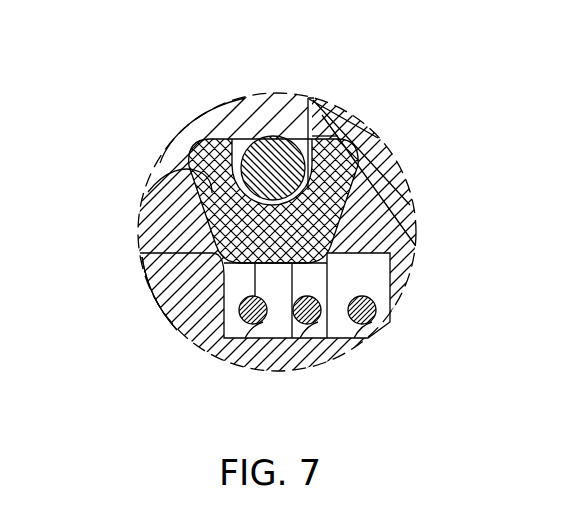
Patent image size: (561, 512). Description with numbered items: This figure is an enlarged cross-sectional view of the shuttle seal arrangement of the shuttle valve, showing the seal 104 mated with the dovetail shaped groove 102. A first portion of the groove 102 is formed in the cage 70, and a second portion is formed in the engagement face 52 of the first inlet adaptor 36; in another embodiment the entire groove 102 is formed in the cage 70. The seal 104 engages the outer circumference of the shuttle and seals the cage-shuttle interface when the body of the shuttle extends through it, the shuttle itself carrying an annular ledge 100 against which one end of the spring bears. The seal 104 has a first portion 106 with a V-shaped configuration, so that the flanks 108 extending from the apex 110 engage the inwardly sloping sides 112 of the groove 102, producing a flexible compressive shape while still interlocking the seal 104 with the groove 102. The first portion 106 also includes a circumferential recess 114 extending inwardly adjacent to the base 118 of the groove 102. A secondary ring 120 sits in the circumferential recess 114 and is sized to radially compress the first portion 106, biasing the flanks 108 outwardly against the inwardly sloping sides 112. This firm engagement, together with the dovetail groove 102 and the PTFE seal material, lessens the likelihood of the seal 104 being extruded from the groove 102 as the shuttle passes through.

The first inlet adaptor 36 is at (164, 162).
The engagement face 52 is at (309, 99).
The cage 70 is at (394, 162).
The annular ledge 100 is at (325, 257).
The groove 102 is at (347, 223).
The seal 104 is at (178, 337).
The first portion 106 is at (217, 213).
The flanks 108 is at (363, 186).
The apex 110 is at (278, 265).
The inwardly sloping sides 112 is at (152, 172).
The circumferential recess 114 is at (320, 142).
The base 118 is at (265, 122).
The secondary ring 120 is at (277, 160).